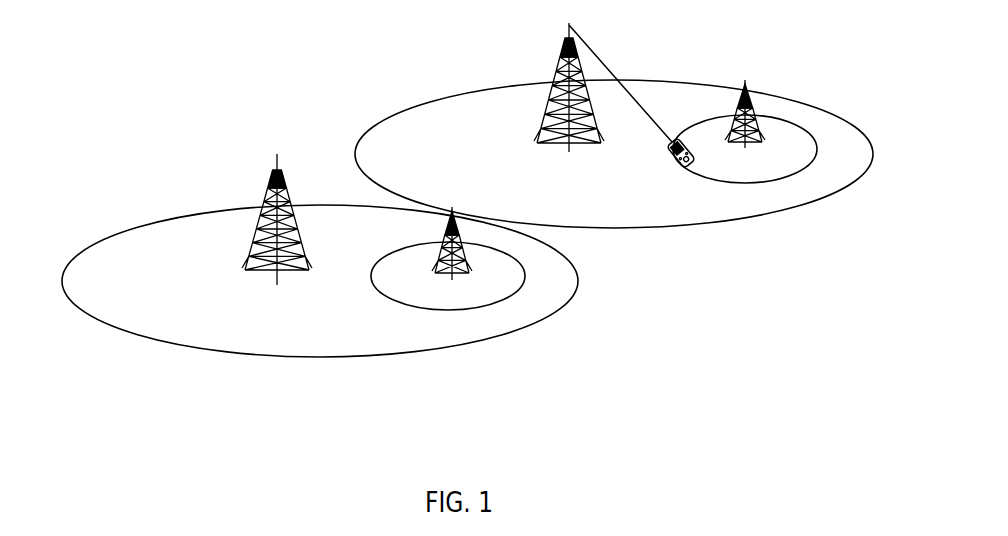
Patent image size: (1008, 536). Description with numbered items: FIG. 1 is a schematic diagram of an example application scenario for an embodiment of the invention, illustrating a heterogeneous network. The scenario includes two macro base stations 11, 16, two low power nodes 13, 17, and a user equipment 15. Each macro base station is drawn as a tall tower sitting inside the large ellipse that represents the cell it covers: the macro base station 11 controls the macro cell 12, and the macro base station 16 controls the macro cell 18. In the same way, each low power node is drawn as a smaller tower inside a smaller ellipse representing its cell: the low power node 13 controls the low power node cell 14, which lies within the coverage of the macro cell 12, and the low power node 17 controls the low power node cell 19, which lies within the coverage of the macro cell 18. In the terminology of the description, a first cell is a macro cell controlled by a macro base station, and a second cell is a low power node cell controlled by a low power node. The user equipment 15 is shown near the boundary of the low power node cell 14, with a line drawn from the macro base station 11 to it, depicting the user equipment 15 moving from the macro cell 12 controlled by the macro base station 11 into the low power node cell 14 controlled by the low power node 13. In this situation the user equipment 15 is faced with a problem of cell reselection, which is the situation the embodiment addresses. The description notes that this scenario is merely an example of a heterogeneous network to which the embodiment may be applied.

The macro base station 11 is at (563, 48).
The macro cell 12 is at (413, 127).
The low power node 13 is at (738, 117).
The low power node cell 14 is at (753, 163).
The user equipment 15 is at (668, 155).
The macro base station 16 is at (273, 177).
The low power node 17 is at (437, 273).
The macro cell 18 is at (223, 310).
The low power node cell 19 is at (517, 277).